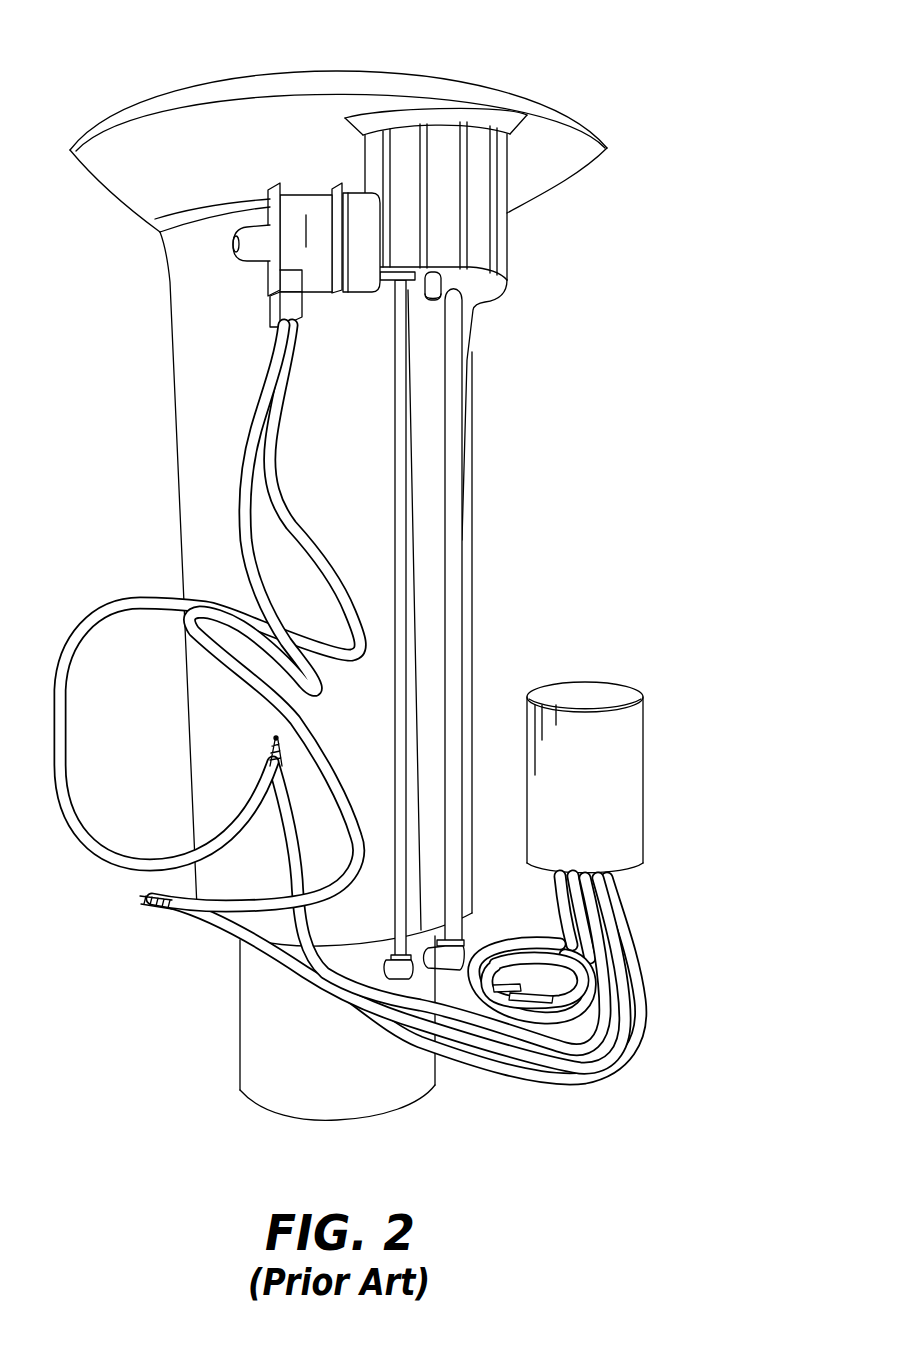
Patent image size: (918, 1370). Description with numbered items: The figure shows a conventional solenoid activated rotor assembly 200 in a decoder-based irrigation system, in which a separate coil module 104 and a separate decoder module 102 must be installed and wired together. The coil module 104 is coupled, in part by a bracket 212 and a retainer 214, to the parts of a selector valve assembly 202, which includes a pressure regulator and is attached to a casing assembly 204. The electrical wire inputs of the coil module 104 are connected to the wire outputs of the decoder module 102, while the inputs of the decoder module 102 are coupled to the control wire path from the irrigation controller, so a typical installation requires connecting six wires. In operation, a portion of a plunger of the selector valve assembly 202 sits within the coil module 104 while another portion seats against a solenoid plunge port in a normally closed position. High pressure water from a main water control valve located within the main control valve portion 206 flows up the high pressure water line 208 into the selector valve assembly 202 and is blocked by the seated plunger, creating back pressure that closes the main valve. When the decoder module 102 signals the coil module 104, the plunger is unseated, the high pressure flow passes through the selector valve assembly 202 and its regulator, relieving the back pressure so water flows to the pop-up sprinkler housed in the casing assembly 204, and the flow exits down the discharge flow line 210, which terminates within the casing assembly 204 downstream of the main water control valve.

The solenoid activated rotor assembly 200 is at (443, 42).
The coil module 104 is at (307, 215).
The bracket 212 is at (158, 231).
The retainer 214 is at (243, 248).
The selector valve assembly 202 is at (370, 230).
The casing assembly 204 is at (473, 481).
The high pressure water line 208 is at (455, 381).
The discharge flow line 210 is at (407, 574).
The decoder module 102 is at (612, 762).
The main control valve portion 206 is at (270, 1100).